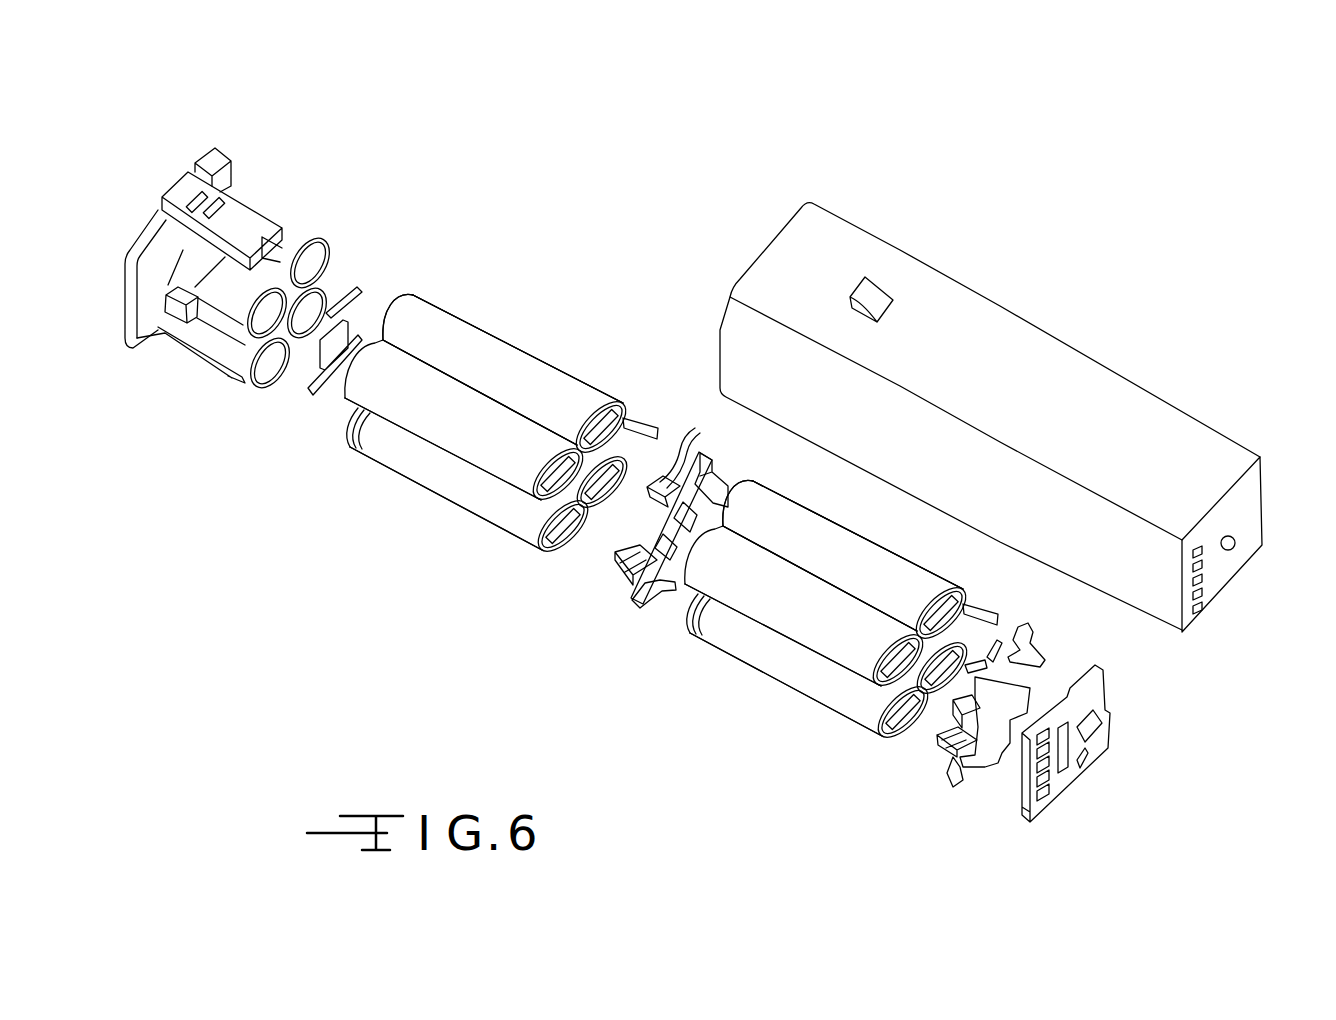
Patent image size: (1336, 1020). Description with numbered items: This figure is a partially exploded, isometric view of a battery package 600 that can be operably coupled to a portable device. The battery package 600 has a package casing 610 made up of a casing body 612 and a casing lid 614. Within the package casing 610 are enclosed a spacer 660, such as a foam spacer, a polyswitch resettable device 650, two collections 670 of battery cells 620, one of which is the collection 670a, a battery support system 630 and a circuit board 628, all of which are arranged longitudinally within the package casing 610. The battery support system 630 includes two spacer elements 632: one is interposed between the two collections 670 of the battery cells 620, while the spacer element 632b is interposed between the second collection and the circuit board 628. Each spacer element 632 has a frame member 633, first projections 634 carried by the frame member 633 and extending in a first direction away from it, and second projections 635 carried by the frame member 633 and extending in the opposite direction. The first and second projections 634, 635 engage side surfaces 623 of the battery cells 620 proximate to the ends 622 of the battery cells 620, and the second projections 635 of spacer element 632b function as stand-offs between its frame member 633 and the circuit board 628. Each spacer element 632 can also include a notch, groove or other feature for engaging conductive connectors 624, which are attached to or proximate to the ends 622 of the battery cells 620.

The battery package 600 is at (794, 409).
The package casing 610 is at (794, 371).
The casing body 612 is at (1253, 508).
The casing lid 614 is at (215, 150).
The battery cells 620 is at (490, 460).
The ends of the battery cells 622 is at (610, 410).
The side surfaces of the battery cells 623 is at (505, 343).
The conductive connectors 624 is at (653, 403).
The circuit board 628 is at (1110, 730).
The battery support system 630 is at (827, 615).
The spacer elements 632 is at (620, 613).
The spacer element 632b is at (938, 777).
The frame member 633 is at (615, 545).
The first projections 634 is at (675, 468).
The second projections 635 is at (702, 468).
The polyswitch resettable device 650 is at (355, 300).
The spacer 660 is at (318, 245).
The collections of battery cells 670 is at (735, 678).
The collection of battery cells 670a is at (340, 470).